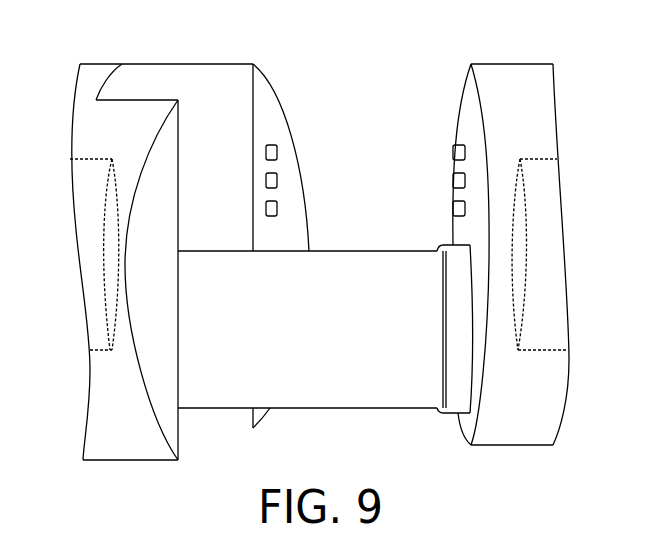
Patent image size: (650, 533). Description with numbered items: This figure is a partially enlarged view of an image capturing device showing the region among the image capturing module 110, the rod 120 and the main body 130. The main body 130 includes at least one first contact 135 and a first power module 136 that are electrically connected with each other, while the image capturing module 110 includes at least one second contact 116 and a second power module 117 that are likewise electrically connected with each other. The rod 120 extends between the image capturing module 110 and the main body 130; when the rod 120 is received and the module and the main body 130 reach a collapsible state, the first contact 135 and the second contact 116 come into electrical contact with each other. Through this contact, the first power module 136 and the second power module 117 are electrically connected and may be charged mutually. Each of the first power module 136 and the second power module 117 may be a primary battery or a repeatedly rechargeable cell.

The image capturing module 110 is at (185, 85).
The second contact 116 is at (271, 146).
The second power module 117 is at (86, 256).
The rod 120 is at (363, 388).
The main body 130 is at (511, 88).
The first contact 135 is at (460, 146).
The first power module 136 is at (545, 350).